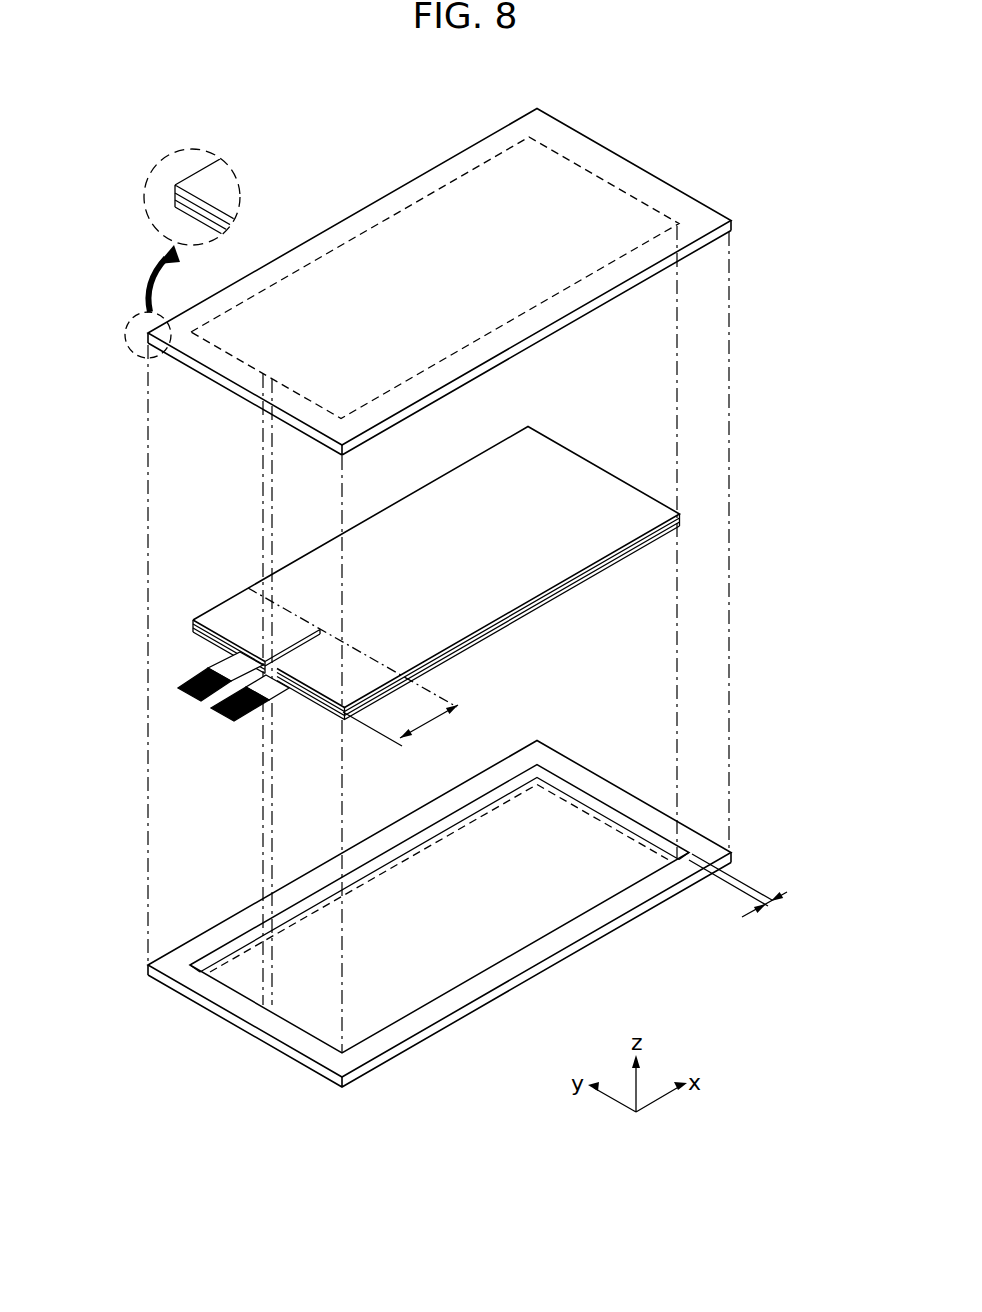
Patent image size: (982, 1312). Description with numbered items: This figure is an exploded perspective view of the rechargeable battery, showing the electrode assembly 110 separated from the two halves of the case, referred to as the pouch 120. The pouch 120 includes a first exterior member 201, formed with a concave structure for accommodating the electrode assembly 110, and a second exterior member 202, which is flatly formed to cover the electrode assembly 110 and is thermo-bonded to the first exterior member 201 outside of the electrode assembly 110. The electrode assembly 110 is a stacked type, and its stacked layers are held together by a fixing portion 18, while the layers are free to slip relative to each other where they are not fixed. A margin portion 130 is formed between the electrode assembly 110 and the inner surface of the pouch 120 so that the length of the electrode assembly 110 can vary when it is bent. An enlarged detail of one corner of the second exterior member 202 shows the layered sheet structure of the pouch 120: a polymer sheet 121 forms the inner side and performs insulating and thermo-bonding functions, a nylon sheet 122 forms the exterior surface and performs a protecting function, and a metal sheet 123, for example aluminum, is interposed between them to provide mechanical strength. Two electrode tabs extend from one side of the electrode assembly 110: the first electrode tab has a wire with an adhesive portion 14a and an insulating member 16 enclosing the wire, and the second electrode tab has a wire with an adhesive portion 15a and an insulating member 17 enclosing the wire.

The pouch 120 is at (788, 397).
The second exterior member 202 is at (596, 343).
The first exterior member 201 is at (618, 770).
The electrode assembly 110 is at (541, 613).
The nylon sheet 122 is at (175, 188).
The metal sheet 123 is at (173, 196).
The polymer sheet 121 is at (173, 204).
The insulating member 17 is at (223, 663).
The adhesive portion 15a is at (177, 685).
The insulating member 16 is at (275, 688).
The adhesive portion 14a is at (233, 720).
The fixing portion 18 is at (400, 727).
The margin portion 130 is at (744, 895).